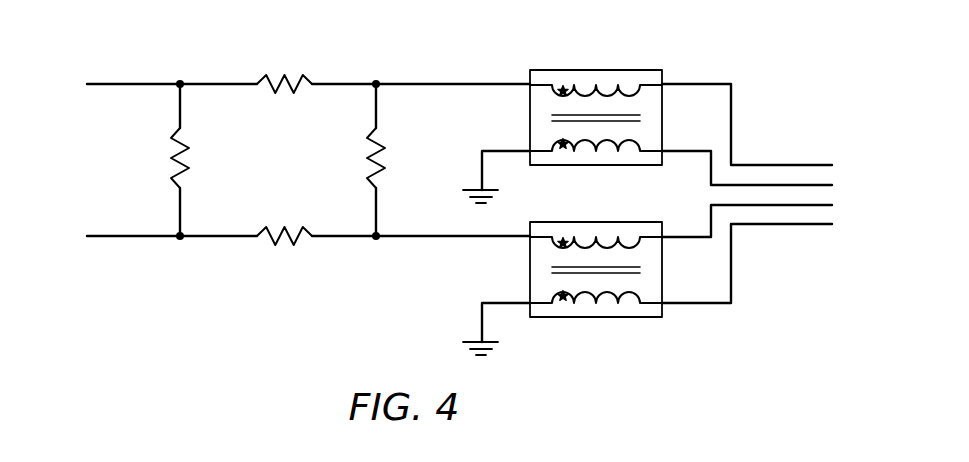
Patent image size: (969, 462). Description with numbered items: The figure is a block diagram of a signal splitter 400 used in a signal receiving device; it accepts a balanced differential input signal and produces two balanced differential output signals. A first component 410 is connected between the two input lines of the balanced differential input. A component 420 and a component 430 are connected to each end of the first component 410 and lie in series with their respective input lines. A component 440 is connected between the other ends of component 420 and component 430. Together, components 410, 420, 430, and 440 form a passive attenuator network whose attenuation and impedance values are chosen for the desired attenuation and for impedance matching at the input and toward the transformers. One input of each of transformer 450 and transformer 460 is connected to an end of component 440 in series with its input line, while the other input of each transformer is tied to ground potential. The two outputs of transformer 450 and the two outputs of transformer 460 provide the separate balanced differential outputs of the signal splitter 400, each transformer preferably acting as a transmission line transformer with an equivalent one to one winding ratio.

The signal splitter 400 is at (199, 284).
The first component 410 is at (172, 161).
The component 420 is at (283, 72).
The component 430 is at (283, 246).
The component 440 is at (368, 161).
The transformer 450 is at (605, 70).
The transformer 460 is at (600, 318).